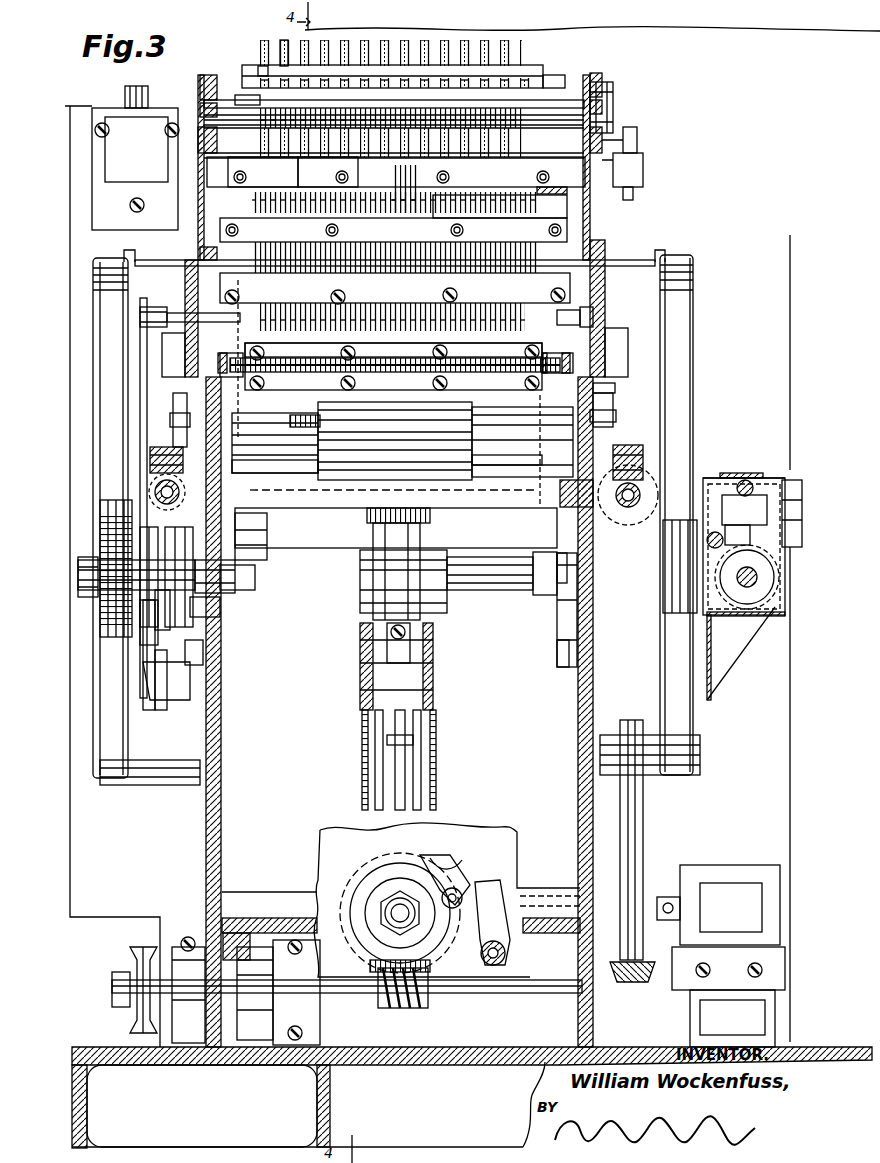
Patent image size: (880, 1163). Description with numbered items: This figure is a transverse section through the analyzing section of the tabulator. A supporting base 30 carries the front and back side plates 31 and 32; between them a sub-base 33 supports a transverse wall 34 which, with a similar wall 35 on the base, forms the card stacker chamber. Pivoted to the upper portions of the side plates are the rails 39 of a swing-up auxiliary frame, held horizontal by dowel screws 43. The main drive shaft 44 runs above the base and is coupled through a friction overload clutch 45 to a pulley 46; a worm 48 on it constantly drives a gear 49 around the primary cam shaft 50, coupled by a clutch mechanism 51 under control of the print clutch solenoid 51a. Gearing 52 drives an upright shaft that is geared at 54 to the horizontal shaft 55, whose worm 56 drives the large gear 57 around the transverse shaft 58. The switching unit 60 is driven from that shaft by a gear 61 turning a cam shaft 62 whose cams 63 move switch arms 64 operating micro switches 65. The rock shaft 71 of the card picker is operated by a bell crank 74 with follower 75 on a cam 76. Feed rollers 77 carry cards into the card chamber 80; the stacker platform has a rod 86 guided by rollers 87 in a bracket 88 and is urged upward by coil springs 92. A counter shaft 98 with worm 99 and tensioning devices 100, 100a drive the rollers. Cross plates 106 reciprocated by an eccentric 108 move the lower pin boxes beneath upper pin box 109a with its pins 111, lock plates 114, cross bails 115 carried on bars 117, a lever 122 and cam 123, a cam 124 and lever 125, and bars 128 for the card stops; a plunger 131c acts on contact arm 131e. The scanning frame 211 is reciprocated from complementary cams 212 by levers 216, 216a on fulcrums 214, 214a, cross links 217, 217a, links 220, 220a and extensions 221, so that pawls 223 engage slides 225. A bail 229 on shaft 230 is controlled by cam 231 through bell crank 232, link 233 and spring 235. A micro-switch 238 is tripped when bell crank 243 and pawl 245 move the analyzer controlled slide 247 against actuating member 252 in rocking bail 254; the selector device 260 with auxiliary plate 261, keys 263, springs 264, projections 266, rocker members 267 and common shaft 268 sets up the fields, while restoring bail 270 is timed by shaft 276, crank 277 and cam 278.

The supporting base 30 is at (428, 1063).
The front side plate 31 is at (206, 863).
The back side plate 32 is at (580, 796).
The sub-base 33 is at (250, 918).
The transverse wall 34 is at (243, 828).
The wall 35 is at (80, 864).
The rails 39 is at (185, 282).
The dowel screws 43 is at (166, 377).
The main drive shaft 44 is at (328, 987).
The friction overload clutch 45 is at (248, 1042).
The pulley 46 is at (130, 951).
The worm 48 is at (410, 1009).
The gear 49 is at (372, 968).
The primary cam shaft 50 is at (372, 902).
The clutch mechanism 51 is at (450, 861).
The print clutch solenoid 51a is at (718, 880).
The gearing 52 is at (640, 979).
The gearing 54 is at (588, 505).
The horizontal shaft 55 is at (642, 462).
The worm 56 is at (640, 490).
The large gear 57 is at (655, 497).
The transverse shaft 58 is at (470, 586).
The switching unit 60 is at (770, 620).
The gear 61 is at (728, 616).
The cam shaft 62 is at (746, 605).
The cams 63 is at (750, 630).
The switch arms 64 is at (713, 531).
The micro switches 65 is at (755, 488).
The rock shaft 71 is at (322, 470).
The bell crank 74 is at (150, 632).
The follower 75 is at (152, 657).
The cam 76 is at (160, 520).
The feed rollers 77 is at (472, 412).
The card chamber 80 is at (502, 462).
The elongated rod 86 is at (375, 726).
The rollers 87 is at (428, 734).
The bracket 88 is at (436, 791).
The coil springs 92 is at (362, 777).
The counter shaft 98 is at (180, 492).
The worm 99 is at (158, 490).
The tensioning device 100 is at (610, 415).
The tensioning device 100a is at (176, 412).
The cross plates 106 is at (360, 706).
The eccentric 108 is at (442, 616).
The upper pin box 109a is at (600, 393).
The pins 111 is at (386, 346).
The lock plates 114 is at (386, 370).
The cross bails 115 is at (445, 358).
The bars 117 is at (233, 354).
The lever 122 is at (222, 592).
The cam 123 is at (163, 600).
The cam 124 is at (148, 625).
The lever 125 is at (176, 535).
The bars 128 is at (215, 372).
The plunger 131c is at (268, 540).
The contact arm 131e is at (258, 565).
The scanning frame 211 is at (590, 236).
The complementary cams 212 is at (120, 632).
The fulcrum 214 is at (97, 761).
The fulcrum 214a is at (703, 757).
The long lever 216 is at (110, 432).
The long lever 216a is at (700, 392).
The cross link 217 is at (100, 527).
The cross link 217a is at (706, 486).
The link 220 is at (133, 258).
The link 220a is at (660, 255).
The extensions 221 is at (165, 260).
The pawls 223 is at (418, 310).
The slide 225 is at (545, 240).
The bail 229 is at (218, 315).
The shaft 230 is at (240, 315).
The cam 231 is at (195, 592).
The bell crank 232 is at (175, 696).
The link 233 is at (140, 393).
The spring 235 is at (196, 653).
The micro-switch 238 is at (643, 172).
The bell crank 243 is at (420, 205).
The pawl 245 is at (392, 185).
The analyzer controlled slide 247 is at (300, 165).
The actuating member 252 is at (250, 165).
The rocking bail 254 is at (200, 86).
The selector device 260 is at (529, 54).
The auxiliary plate 261 is at (550, 78).
The key 263 is at (450, 48).
The spring 264 is at (284, 50).
The projection 266 is at (262, 70).
The rocker member 267 is at (245, 98).
The common shaft 268 is at (198, 110).
The restoring bail 270 is at (537, 190).
The shaft 276 is at (557, 651).
The crank 277 is at (557, 628).
The cam 278 is at (556, 604).